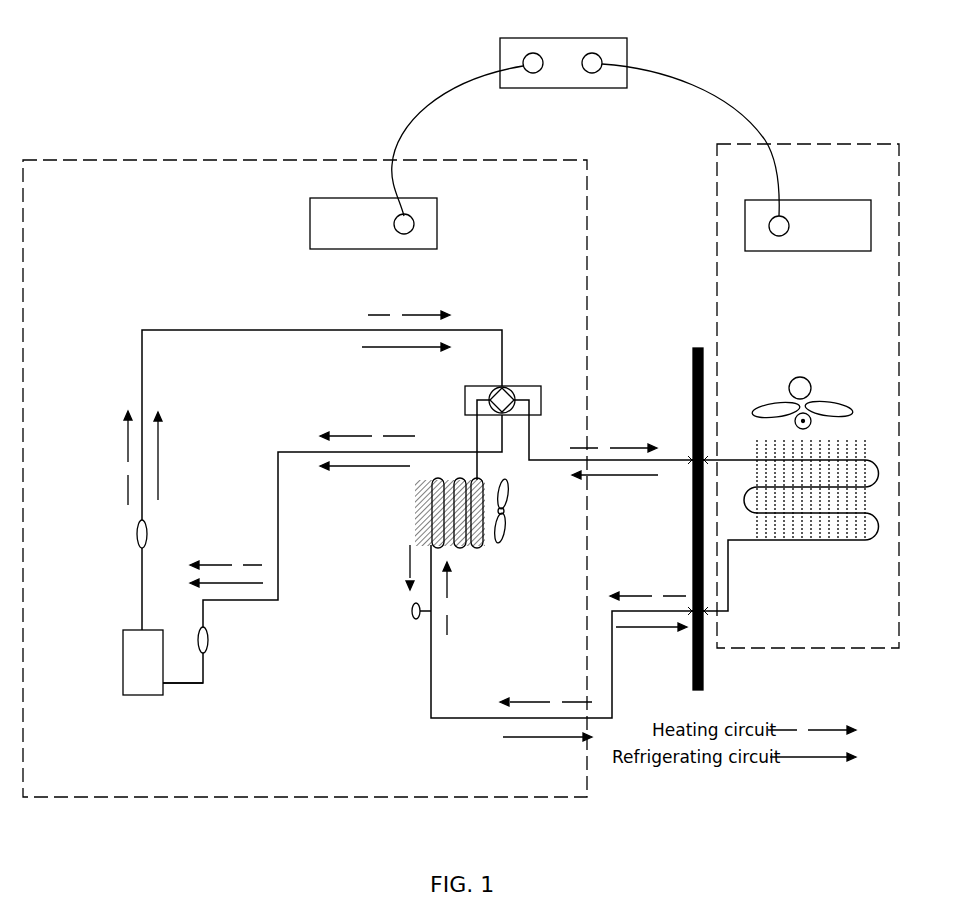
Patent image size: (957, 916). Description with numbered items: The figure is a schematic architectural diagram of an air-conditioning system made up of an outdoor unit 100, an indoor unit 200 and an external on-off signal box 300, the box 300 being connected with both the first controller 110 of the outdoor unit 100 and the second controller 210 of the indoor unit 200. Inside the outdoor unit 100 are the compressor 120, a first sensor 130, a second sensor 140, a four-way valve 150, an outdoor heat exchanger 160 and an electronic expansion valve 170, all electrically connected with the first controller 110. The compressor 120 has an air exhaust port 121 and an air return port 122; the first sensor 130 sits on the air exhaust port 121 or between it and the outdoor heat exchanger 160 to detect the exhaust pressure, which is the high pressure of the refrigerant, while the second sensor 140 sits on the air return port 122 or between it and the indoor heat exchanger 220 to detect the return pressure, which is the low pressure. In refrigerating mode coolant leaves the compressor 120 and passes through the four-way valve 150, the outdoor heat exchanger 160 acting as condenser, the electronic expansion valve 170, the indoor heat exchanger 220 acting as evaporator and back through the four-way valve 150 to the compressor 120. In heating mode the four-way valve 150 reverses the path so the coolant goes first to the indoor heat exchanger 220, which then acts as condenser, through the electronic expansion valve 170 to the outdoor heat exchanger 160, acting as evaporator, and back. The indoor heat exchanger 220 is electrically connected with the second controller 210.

The outdoor unit 100 is at (214, 160).
The first controller 110 is at (310, 226).
The compressor 120 is at (123, 660).
The air exhaust port 121 is at (140, 628).
The air return port 122 is at (168, 684).
The first sensor 130 is at (137, 533).
The second sensor 140 is at (208, 640).
The four-way valve 150 is at (465, 400).
The outdoor heat exchanger 160 is at (415, 525).
The electronic expansion valve 170 is at (412, 611).
The indoor unit 200 is at (817, 144).
The second controller 210 is at (821, 200).
The indoor heat exchanger 220 is at (818, 540).
The external on-off signal box 300 is at (627, 40).